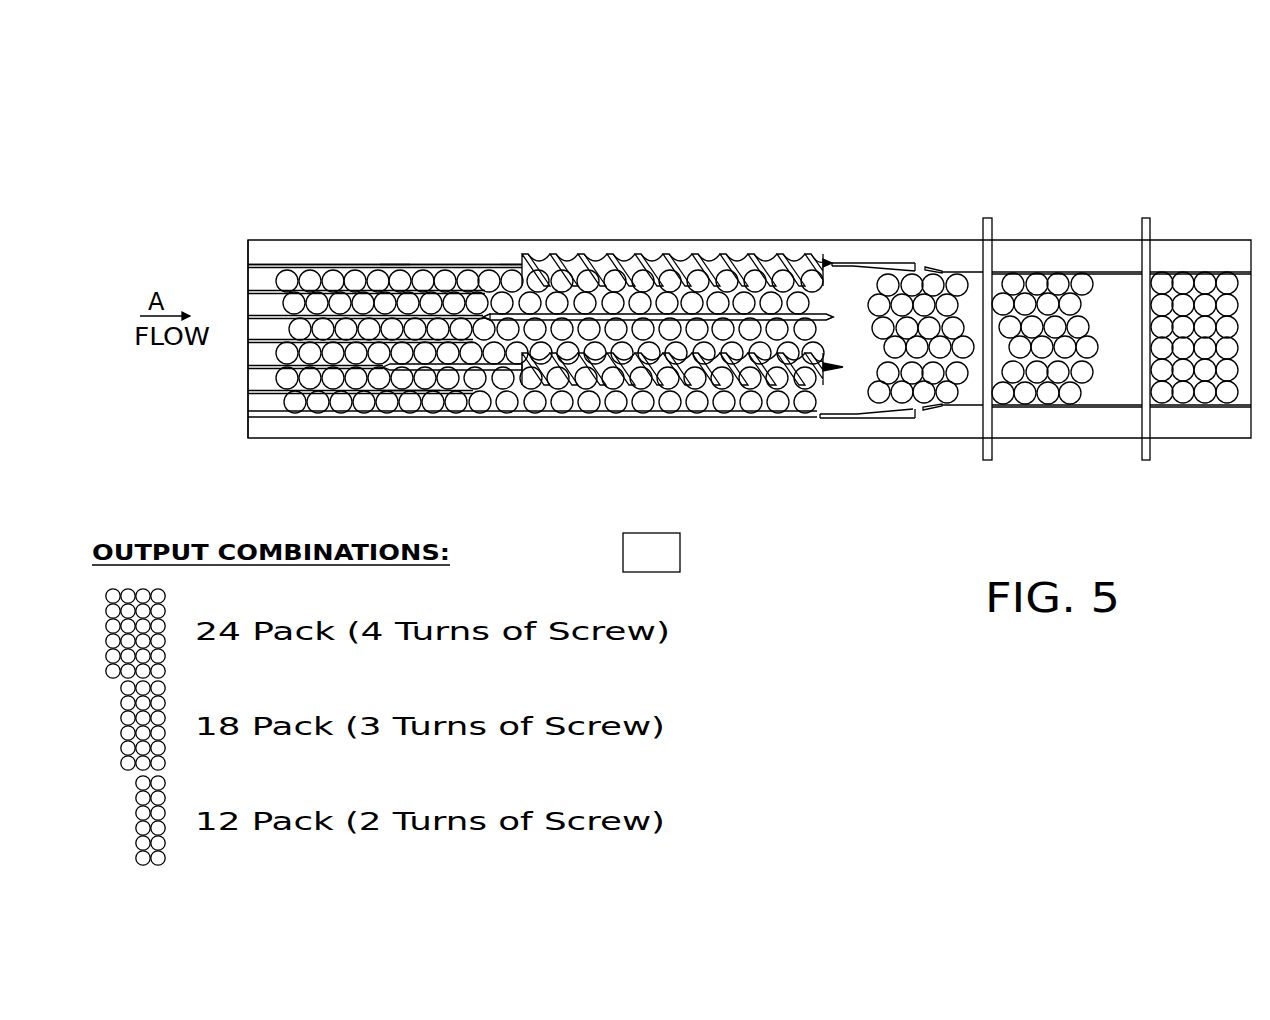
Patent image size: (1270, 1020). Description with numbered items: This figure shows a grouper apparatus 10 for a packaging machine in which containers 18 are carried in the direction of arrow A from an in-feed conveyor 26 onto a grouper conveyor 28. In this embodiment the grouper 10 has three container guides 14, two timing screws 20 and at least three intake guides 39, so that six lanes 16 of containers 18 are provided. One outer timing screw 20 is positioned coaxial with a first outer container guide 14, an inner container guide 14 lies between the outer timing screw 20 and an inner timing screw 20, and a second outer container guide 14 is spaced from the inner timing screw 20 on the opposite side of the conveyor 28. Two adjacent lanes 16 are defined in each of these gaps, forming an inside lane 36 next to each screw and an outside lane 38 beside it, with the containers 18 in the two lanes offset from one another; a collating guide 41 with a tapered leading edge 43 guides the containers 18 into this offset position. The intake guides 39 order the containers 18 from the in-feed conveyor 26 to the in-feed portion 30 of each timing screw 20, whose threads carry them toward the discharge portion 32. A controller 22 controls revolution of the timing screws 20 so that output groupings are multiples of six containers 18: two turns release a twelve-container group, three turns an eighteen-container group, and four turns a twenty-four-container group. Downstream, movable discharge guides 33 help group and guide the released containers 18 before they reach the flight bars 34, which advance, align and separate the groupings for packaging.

The grouper apparatus 10 is at (745, 103).
The container guides 14 is at (346, 264).
The lanes 16 is at (595, 316).
The containers 18 is at (760, 280).
The timing screw 20 is at (662, 256).
The controller 22 is at (652, 417).
The in-feed conveyor 26 is at (265, 283).
The grouper conveyor 28 is at (410, 264).
The in-feed portion of the timing screw 30 is at (523, 255).
The discharge portion of the timing screw 32 is at (826, 261).
The movable discharge guides 33 is at (906, 265).
The flight bar 34 is at (990, 218).
The inside lane 36 is at (822, 298).
The outside lane 38 is at (846, 280).
The intake guides 39 is at (400, 266).
The collating guide 41 is at (508, 268).
The tapered leading edge 43 is at (482, 316).